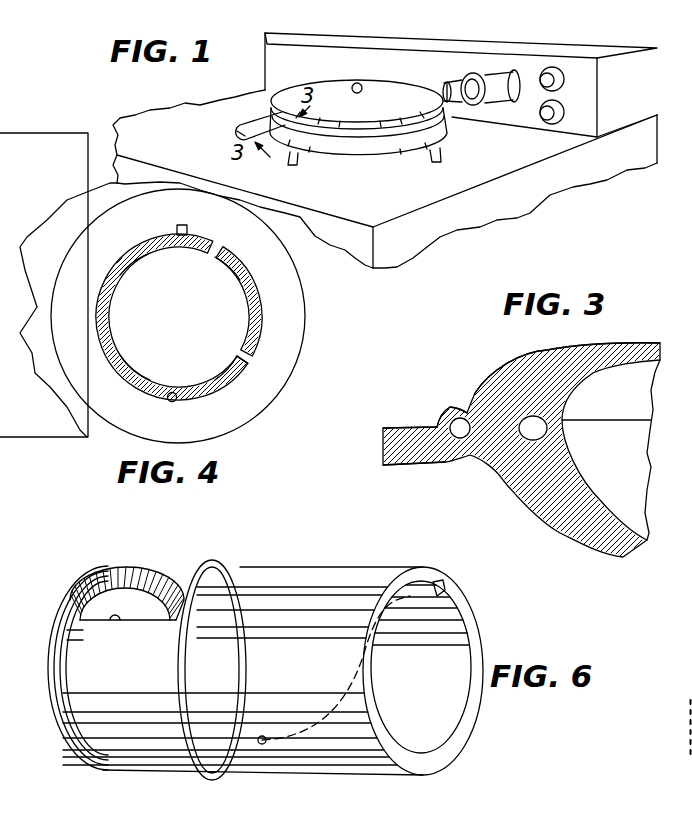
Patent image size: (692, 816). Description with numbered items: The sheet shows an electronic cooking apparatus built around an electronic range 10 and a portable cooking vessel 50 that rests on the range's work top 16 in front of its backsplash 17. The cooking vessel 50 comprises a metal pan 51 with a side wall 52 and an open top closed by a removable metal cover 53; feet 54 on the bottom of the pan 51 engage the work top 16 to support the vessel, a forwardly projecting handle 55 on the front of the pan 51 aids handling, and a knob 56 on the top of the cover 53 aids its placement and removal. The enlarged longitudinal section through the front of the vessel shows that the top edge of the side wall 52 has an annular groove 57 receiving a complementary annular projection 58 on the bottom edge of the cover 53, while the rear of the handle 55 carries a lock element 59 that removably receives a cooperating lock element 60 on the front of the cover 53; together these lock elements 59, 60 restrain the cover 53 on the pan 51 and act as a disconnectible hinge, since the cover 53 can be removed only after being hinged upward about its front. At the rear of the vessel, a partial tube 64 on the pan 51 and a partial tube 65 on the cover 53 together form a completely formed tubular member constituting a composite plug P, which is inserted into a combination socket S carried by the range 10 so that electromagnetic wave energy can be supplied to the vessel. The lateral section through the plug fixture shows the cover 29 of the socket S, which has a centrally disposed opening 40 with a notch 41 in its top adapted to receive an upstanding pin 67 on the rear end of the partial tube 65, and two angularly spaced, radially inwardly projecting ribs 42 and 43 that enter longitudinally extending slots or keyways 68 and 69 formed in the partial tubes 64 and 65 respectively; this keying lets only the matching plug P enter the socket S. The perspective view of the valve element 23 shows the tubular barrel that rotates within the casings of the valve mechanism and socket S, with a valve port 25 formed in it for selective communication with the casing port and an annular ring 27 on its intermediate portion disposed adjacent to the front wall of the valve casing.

In FIG. 1, the electronic range 10 is at (385, 136).
In FIG. 1, the work top 16 is at (499, 152).
In FIG. 1, the backsplash 17 is at (617, 60).
In FIG. 1, the portable cooking vessel 50 is at (328, 117).
In FIG. 1, the metal pan 51 is at (356, 152).
In FIG. 3, the metal pan 51 is at (547, 515).
In FIG. 1, the removable metal cover 53 is at (383, 87).
In FIG. 3, the removable metal cover 53 is at (510, 360).
In FIG. 1, the feet 54 is at (438, 153).
In FIG. 1, the handle 55 is at (233, 126).
In FIG. 3, the handle 55 is at (397, 426).
In FIG. 1, the knob 56 is at (360, 84).
In FIG. 1, the composite plug P is at (445, 78).
In FIG. 1, the combination socket S is at (489, 70).
In FIG. 4, the cover 29 is at (304, 334).
In FIG. 4, the opening 40 is at (174, 402).
In FIG. 4, the notch 41 is at (181, 224).
In FIG. 4, the rib 42 is at (244, 361).
In FIG. 4, the rib 43 is at (218, 248).
In FIG. 4, the partial tube 64 is at (141, 380).
In FIG. 4, the partial tube 65 is at (148, 252).
In FIG. 4, the upstanding pin 67 is at (187, 236).
In FIG. 4, the slot or keyway 68 is at (243, 357).
In FIG. 4, the slot or keyway 69 is at (227, 257).
In FIG. 3, the side wall 52 is at (582, 468).
In FIG. 3, the annular groove 57 is at (562, 440).
In FIG. 3, the annular projection 58 is at (563, 405).
In FIG. 3, the lock element 59 is at (444, 410).
In FIG. 3, the lock element 60 is at (443, 455).
In FIG. 6, the valve element 23 is at (290, 567).
In FIG. 6, the valve port 25 is at (124, 616).
In FIG. 6, the annular ring 27 is at (236, 562).